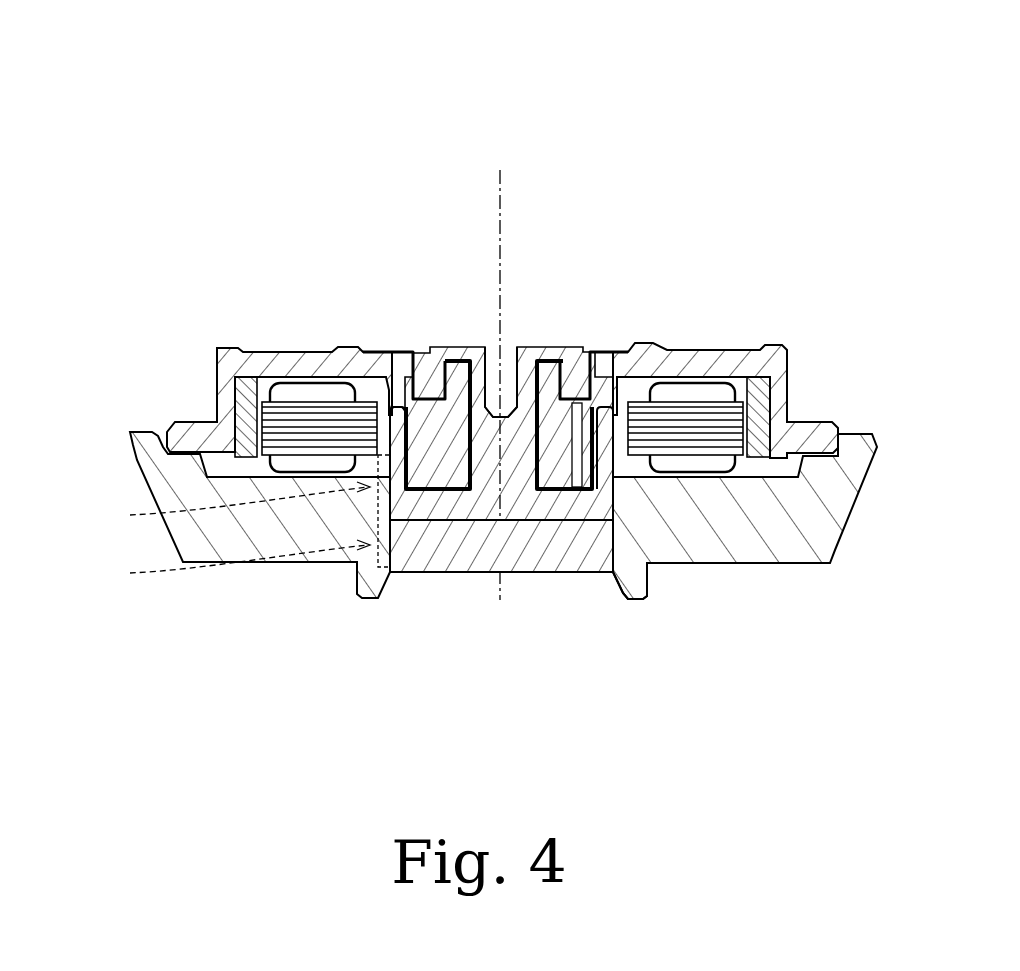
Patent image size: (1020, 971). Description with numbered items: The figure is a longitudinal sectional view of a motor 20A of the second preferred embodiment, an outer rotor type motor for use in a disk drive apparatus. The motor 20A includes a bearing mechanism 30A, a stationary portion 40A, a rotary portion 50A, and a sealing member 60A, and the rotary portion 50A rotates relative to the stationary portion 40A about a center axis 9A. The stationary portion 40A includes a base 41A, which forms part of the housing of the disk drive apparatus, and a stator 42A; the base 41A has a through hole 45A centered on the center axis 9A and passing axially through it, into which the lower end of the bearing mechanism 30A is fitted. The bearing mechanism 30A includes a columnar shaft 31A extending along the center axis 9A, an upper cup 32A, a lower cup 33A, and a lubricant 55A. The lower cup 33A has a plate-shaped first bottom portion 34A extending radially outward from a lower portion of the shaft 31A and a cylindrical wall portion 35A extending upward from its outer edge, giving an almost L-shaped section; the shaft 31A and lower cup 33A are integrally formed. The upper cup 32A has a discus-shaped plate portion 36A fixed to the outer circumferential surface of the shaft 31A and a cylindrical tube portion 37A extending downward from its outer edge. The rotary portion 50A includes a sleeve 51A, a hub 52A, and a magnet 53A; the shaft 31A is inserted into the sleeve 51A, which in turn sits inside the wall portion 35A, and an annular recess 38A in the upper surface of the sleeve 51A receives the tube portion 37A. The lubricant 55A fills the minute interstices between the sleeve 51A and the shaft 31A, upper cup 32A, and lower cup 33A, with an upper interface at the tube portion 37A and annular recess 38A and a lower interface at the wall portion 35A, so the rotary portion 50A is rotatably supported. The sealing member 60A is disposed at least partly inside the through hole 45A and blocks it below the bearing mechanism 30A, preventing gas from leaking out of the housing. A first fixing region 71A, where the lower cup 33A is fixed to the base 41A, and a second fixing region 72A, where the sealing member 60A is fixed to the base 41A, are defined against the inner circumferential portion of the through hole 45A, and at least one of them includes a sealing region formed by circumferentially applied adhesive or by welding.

The motor 20A is at (600, 118).
The center axis 9A is at (498, 196).
The bearing mechanism 30A is at (523, 492).
The shaft 31A is at (505, 460).
The upper cup 32A is at (660, 270).
The lower cup 33A is at (390, 673).
The first bottom portion 34A is at (450, 510).
The wall portion 35A is at (395, 510).
The plate portion 36A is at (560, 356).
The tube portion 37A is at (580, 383).
The annular recess 38A is at (427, 390).
The stationary portion 40A is at (730, 270).
The base 41A is at (740, 517).
The stator 42A is at (710, 392).
The through hole 45A is at (482, 455).
The rotary portion 50A is at (150, 230).
The sleeve 51A is at (342, 350).
The hub 52A is at (300, 350).
The magnet 53A is at (222, 347).
The lubricant 55A is at (692, 562).
The sealing member 60A is at (608, 570).
The first fixing region 71A is at (222, 506).
The second fixing region 72A is at (232, 521).